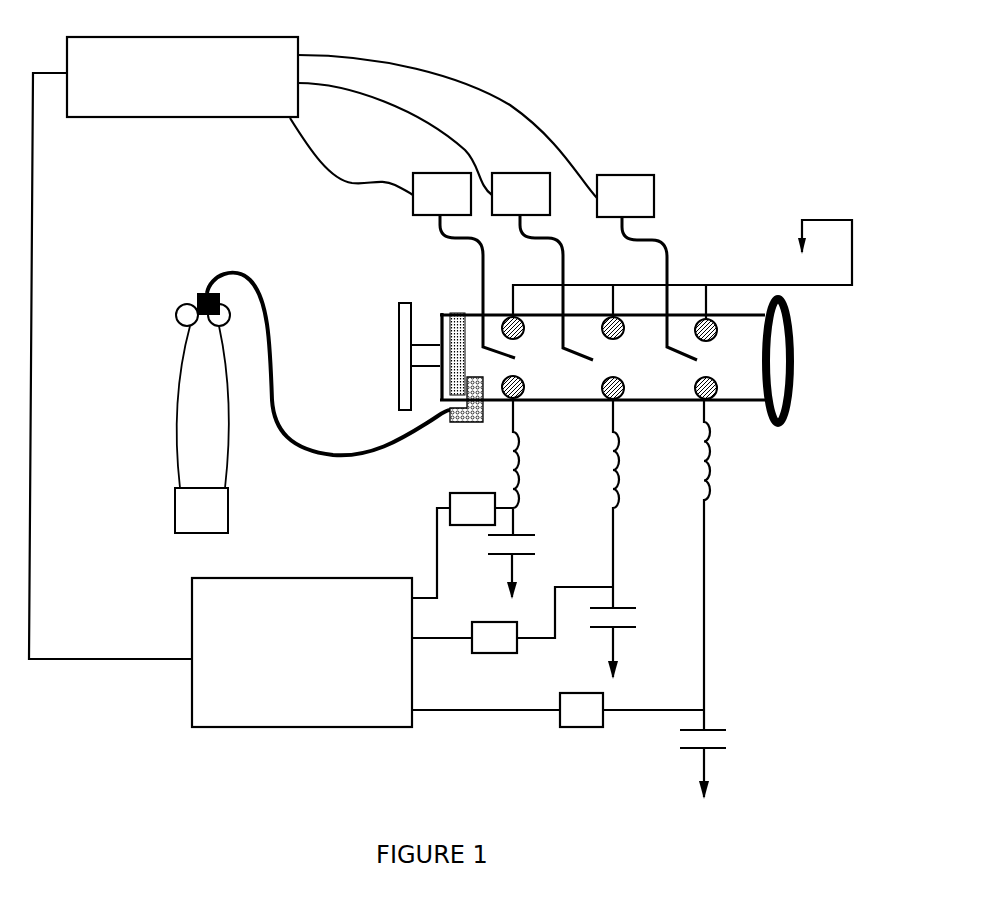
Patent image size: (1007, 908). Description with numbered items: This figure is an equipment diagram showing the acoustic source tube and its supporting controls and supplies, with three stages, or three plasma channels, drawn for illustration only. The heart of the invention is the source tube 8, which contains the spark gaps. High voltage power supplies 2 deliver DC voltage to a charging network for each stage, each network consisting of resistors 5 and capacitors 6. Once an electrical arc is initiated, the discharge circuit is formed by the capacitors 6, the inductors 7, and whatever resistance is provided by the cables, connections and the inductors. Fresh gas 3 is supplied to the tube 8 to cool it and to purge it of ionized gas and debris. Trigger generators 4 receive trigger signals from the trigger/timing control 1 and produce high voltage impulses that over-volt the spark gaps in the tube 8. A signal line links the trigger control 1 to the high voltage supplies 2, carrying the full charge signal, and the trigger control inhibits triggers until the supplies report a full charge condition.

The trigger/timing control 1 is at (182, 77).
The high voltage power supplies 2 is at (302, 652).
The fresh gas 3 is at (312, 403).
The trigger generators 4 is at (555, 266).
The resistors 5 is at (558, 610).
The capacitors 6 is at (770, 693).
The inductors 7 is at (536, 452).
The source tube 8 is at (801, 426).